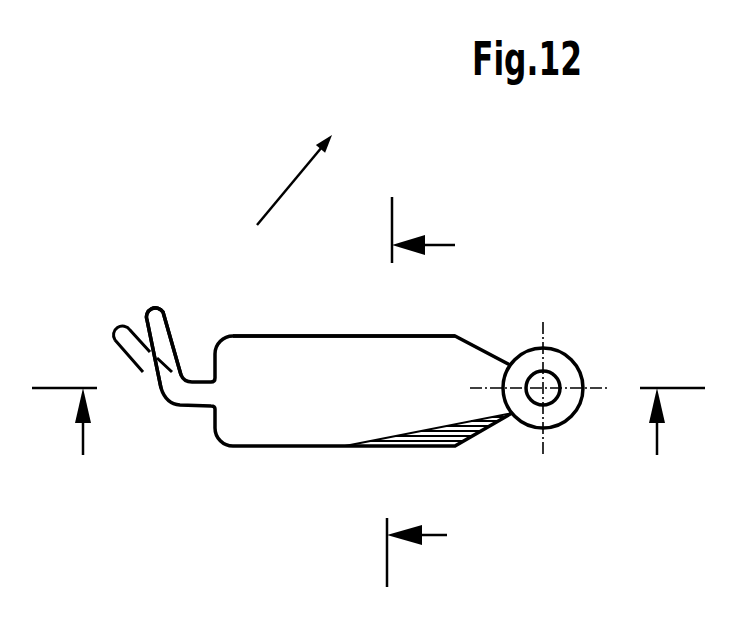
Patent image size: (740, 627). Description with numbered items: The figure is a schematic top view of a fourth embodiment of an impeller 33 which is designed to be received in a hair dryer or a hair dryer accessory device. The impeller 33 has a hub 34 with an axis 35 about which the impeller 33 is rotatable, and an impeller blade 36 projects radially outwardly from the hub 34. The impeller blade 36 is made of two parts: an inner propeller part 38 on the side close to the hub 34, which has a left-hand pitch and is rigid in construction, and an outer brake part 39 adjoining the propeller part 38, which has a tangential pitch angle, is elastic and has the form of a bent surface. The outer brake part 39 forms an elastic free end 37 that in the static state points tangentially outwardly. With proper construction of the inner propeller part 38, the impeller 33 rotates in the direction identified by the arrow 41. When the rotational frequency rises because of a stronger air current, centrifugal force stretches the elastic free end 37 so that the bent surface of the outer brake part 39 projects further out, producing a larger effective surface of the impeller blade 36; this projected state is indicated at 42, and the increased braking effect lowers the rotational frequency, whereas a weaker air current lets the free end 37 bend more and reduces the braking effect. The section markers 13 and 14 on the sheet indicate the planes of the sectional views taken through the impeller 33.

The impeller 33 is at (255, 471).
The hub 34 is at (517, 418).
The axis 35 is at (548, 372).
The impeller blade 36 is at (293, 423).
The elastic free end 37 is at (137, 266).
The inner propeller part 38 is at (322, 363).
The outer brake part 39 is at (156, 320).
The arrow 41 is at (280, 192).
The projected outer brake part position 42 is at (152, 378).
The section line for FIG. 13 is at (371, 421).
The section line for FIG. 14 is at (425, 390).